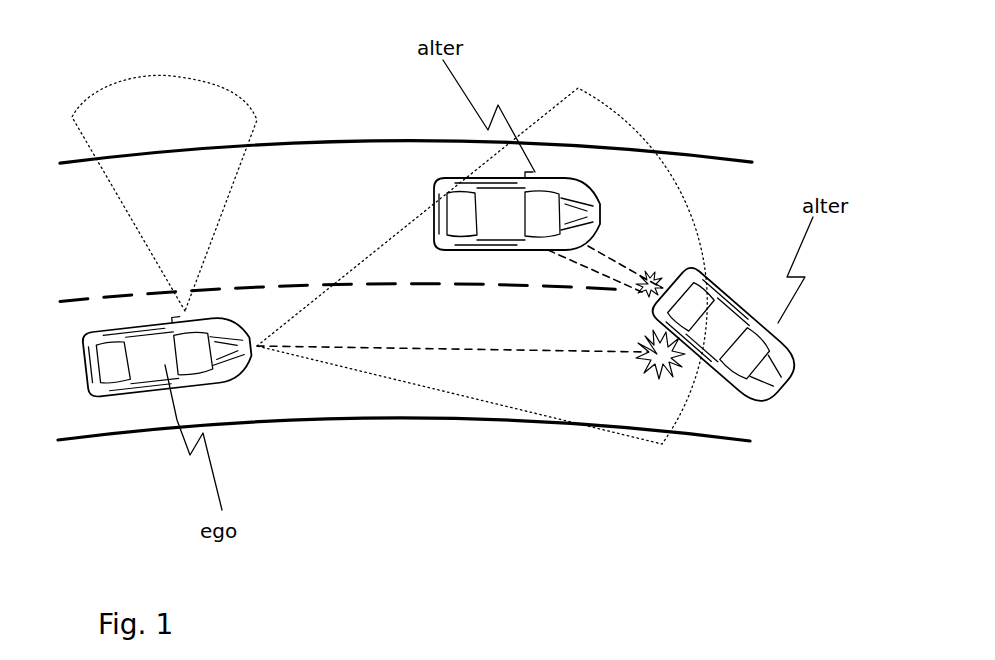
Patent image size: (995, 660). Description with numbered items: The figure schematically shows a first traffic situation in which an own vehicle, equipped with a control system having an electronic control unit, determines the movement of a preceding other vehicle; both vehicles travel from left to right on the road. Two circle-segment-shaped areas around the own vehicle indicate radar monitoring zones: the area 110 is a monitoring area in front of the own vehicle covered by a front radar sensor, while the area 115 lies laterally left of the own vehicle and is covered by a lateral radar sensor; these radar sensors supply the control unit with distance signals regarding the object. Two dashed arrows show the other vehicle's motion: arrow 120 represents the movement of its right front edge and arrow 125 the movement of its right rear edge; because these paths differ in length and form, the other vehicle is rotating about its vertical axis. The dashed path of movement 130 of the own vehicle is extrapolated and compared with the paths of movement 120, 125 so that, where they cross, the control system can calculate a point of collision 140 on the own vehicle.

The monitoring area of front radar sensor 110 is at (400, 383).
The monitoring area of lateral radar sensor 115 is at (249, 122).
The movement of right front edge of other vehicle 120 is at (647, 270).
The movement of right rear edge of other vehicle 125 is at (590, 268).
The path of movement of own vehicle 130 is at (483, 352).
The point of collision 140 is at (670, 368).